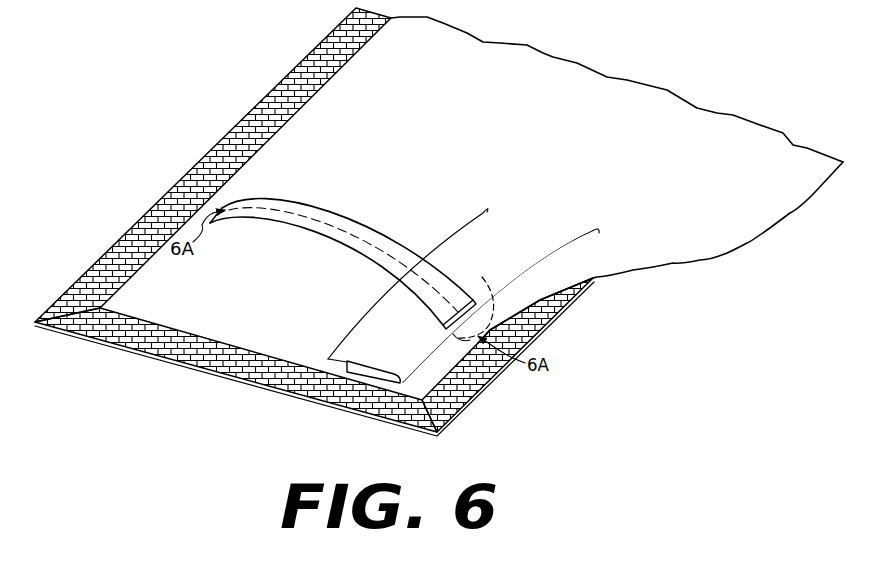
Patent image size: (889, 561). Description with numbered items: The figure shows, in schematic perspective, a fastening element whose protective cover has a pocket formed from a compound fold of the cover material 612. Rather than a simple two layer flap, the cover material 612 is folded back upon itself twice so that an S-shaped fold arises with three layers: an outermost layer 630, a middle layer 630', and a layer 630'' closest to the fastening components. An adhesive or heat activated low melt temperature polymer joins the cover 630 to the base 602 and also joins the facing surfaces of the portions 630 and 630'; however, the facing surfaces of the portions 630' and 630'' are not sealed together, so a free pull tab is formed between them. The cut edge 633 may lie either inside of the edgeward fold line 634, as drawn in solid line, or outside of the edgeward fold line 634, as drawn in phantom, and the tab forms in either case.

The base 602 is at (100, 275).
The cover material 612 is at (313, 87).
The outermost layer of cover 630 is at (403, 290).
The middle layer of cover 630' is at (330, 394).
The innermost layer of cover 630'' is at (353, 421).
The cut edge 633 is at (480, 298).
The edgeward fold line 634 is at (570, 250).